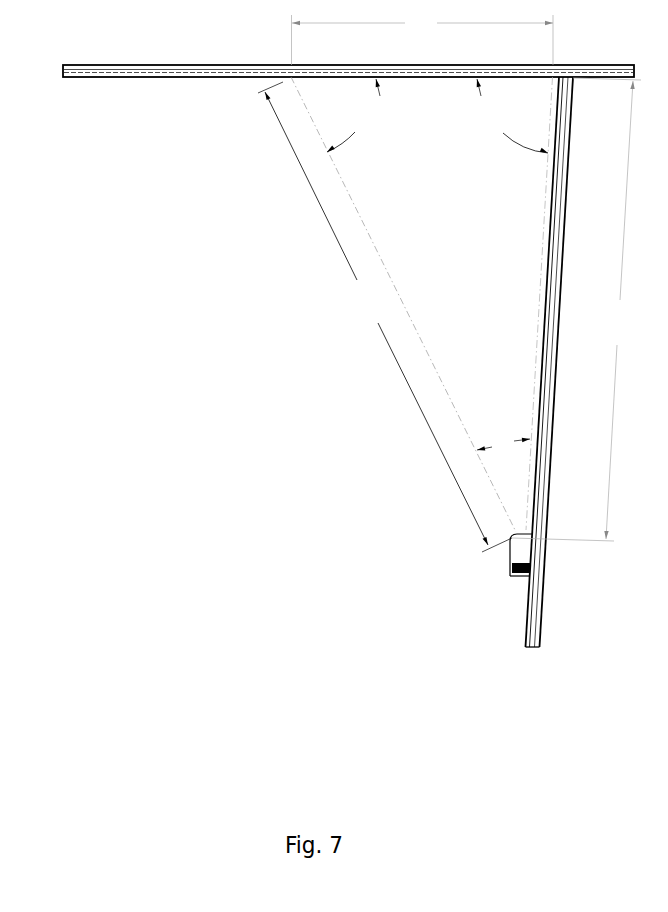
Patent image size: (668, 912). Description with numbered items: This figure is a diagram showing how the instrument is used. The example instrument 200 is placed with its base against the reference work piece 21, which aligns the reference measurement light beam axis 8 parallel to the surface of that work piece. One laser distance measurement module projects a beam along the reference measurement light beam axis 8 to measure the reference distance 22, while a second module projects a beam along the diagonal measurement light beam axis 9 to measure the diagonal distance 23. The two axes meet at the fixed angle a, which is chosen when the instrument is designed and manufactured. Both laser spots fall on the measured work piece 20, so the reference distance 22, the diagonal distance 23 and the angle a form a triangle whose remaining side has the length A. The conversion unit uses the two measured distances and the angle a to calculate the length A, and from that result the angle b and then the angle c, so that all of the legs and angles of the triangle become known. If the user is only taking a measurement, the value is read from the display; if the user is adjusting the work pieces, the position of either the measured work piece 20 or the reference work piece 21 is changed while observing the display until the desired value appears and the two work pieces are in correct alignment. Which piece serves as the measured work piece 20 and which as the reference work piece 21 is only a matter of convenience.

The measured work piece 20 is at (97, 78).
The reference work piece 21 is at (544, 578).
The reference measurement light beam axis 8 is at (545, 195).
The diagonal measurement light beam axis 9 is at (385, 182).
The reference distance 22 is at (576, 309).
The diagonal distance 23 is at (385, 317).
The example instrument 200 is at (509, 565).
The length of side A is at (423, 38).
The angle a is at (503, 446).
The angle b is at (353, 115).
The angle c is at (512, 116).